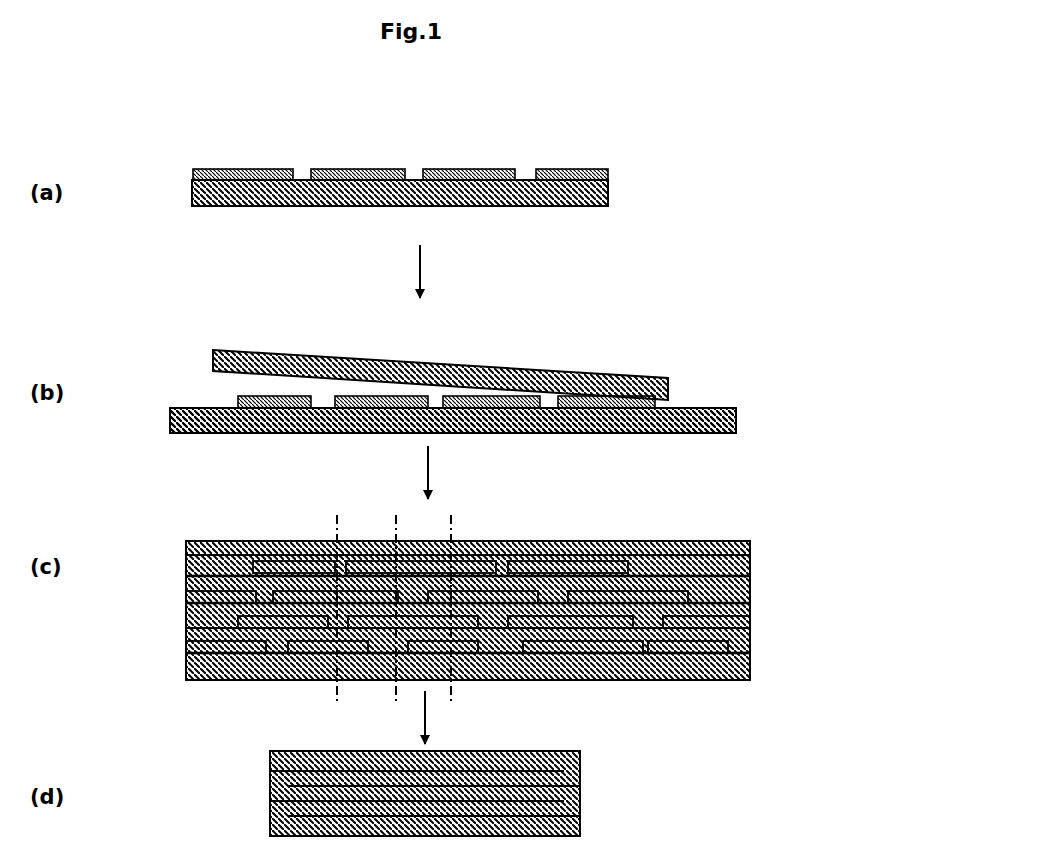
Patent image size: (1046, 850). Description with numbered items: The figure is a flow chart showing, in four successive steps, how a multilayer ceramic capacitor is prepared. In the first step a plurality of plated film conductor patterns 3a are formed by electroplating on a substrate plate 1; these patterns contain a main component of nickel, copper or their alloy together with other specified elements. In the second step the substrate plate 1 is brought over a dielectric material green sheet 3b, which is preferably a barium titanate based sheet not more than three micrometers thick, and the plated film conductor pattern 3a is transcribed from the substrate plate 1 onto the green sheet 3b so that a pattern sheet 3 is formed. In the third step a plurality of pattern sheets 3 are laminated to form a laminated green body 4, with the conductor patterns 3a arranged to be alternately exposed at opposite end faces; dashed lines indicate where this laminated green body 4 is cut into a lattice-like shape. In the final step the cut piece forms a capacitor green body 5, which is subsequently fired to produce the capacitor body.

The substrate plate 1 is at (602, 184).
The pattern sheet 3 is at (903, 352).
The plated film conductor pattern 3a is at (357, 161).
The dielectric material green sheet 3b is at (728, 416).
The laminated green body 4 is at (750, 513).
The capacitor green body 5 is at (592, 737).